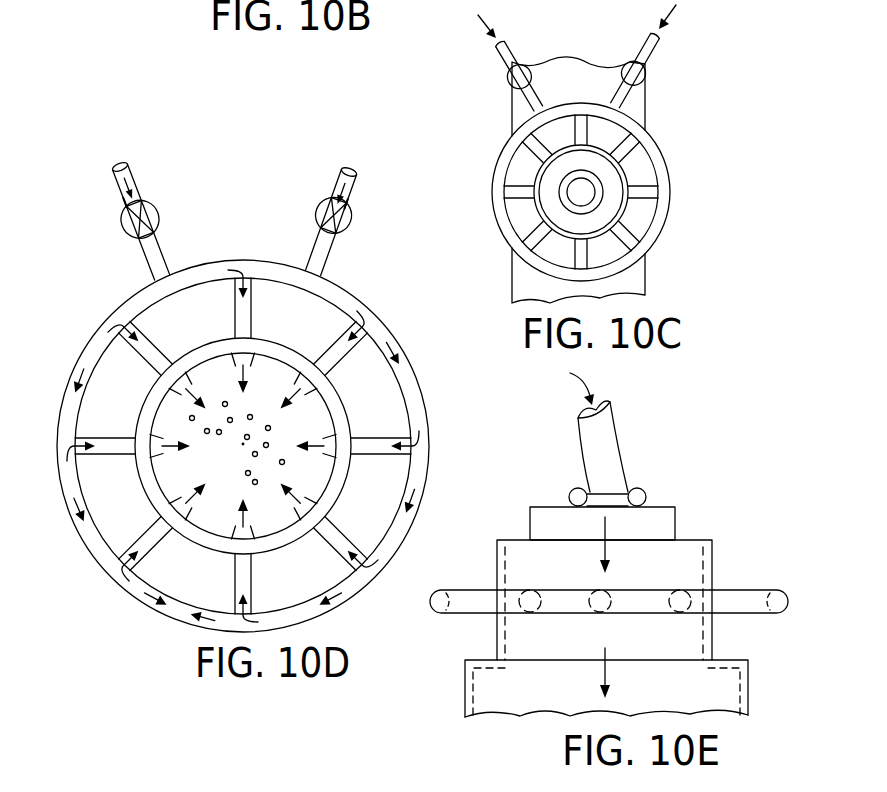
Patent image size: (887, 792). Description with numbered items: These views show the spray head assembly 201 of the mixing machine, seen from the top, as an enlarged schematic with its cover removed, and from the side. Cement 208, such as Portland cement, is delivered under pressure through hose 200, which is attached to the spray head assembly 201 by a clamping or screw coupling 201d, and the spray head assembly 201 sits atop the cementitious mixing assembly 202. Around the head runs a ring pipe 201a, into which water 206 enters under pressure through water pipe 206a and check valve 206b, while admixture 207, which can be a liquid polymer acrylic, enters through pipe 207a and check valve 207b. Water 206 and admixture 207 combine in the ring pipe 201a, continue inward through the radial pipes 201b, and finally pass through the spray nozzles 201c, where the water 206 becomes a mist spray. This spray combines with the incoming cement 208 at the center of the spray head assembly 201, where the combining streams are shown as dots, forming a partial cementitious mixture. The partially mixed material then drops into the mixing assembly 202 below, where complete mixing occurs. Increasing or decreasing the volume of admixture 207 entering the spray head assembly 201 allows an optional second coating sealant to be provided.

In FIG. 10E, the hose 200 is at (623, 448).
In FIG. 10E, the spray head assembly 201 is at (497, 565).
In FIG. 10D, the ring pipe 201a is at (78, 357).
In FIG. 10D, the radial pipes 201b is at (129, 526).
In FIG. 10D, the spray nozzles 201c is at (158, 455).
In FIG. 10E, the clamping or screw coupling 201d is at (648, 497).
In FIG. 10E, the cementitious mixing assembly 202 is at (465, 695).
In FIG. 10D, the water 206 is at (105, 149).
In FIG. 10D, the water pipe 206a is at (137, 181).
In FIG. 10D, the check valve 206b is at (163, 223).
In FIG. 10D, the admixture 207 is at (362, 156).
In FIG. 10D, the pipe 207a is at (356, 193).
In FIG. 10D, the check valve 207b is at (352, 226).
In FIG. 10D, the cement 208 is at (272, 382).
In FIG. 10E, the cement 208 is at (590, 380).